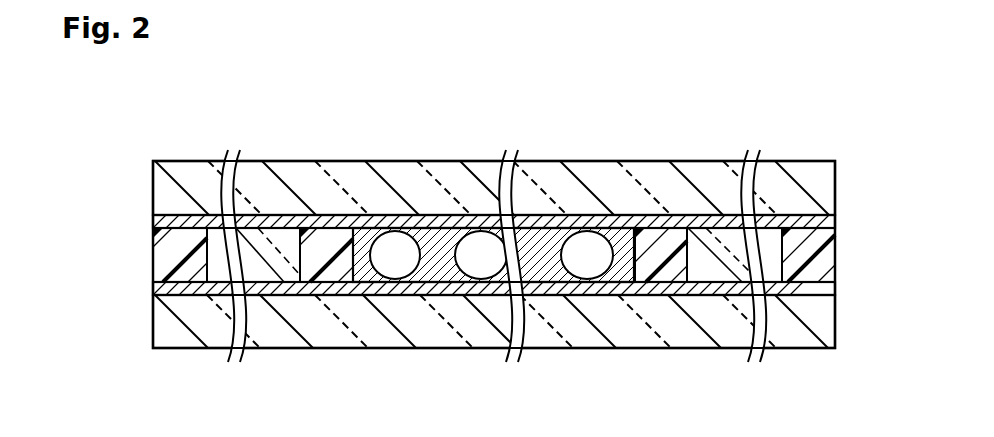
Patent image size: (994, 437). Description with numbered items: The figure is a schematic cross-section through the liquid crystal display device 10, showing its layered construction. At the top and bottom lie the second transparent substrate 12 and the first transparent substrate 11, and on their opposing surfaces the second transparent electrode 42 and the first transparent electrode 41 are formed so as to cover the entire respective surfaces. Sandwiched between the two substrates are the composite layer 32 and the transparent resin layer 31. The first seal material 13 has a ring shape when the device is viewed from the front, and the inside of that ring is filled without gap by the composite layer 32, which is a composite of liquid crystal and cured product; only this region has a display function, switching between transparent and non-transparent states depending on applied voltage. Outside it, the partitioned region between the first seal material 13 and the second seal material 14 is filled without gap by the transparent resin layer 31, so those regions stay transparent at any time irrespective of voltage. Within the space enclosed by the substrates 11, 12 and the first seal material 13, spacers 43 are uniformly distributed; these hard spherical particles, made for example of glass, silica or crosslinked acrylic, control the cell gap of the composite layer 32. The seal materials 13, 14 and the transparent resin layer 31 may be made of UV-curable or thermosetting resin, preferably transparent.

The liquid crystal display device 10 is at (652, 103).
The first transparent substrate 11 is at (447, 349).
The second transparent substrate 12 is at (424, 161).
The first seal material 13 is at (298, 250).
The second seal material 14 is at (153, 253).
The transparent resin layer 31 is at (277, 256).
The composite layer 32 is at (423, 280).
The first transparent electrode 41 is at (552, 274).
The second transparent electrode 42 is at (546, 238).
The spacers 43 is at (389, 240).